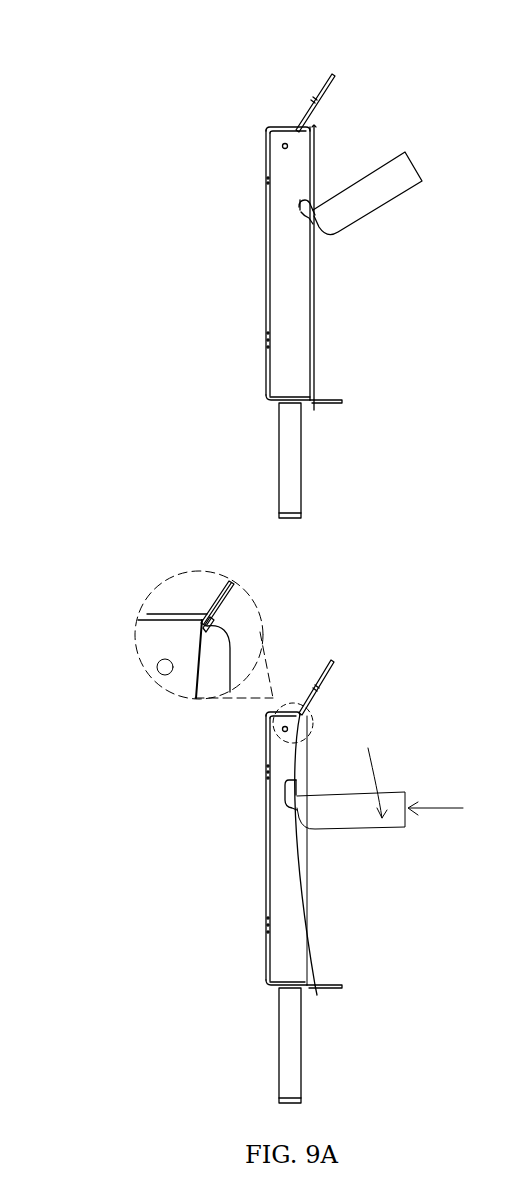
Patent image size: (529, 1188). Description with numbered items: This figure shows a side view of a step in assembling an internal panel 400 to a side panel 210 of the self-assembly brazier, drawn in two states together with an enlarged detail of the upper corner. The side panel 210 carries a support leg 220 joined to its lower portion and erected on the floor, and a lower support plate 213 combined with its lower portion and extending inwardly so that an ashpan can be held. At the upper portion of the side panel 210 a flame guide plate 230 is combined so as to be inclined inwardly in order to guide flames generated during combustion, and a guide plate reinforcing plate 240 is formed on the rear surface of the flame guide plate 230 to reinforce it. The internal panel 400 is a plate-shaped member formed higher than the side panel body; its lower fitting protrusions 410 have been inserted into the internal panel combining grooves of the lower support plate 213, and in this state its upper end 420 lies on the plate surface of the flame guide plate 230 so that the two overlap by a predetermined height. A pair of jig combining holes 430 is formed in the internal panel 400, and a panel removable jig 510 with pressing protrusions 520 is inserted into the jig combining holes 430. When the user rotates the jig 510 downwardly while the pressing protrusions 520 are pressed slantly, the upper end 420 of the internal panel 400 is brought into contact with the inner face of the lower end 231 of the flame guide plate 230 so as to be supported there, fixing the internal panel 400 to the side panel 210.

The side panel 210 is at (288, 303).
The lower support plate 213 is at (338, 403).
The support leg 220 is at (288, 461).
The flame guide plate 230 is at (331, 77).
The lower end of the flame guide plate 231 is at (266, 128).
The guide plate reinforcing plate 240 is at (296, 111).
The internal panel 400 is at (318, 304).
The lower fitting protrusion 410 is at (316, 406).
The upper end of the internal panel 420 is at (318, 125).
The jig combining hole 430 is at (314, 222).
The panel removable jig 510 is at (390, 188).
The pressing protrusion 520 is at (298, 205).